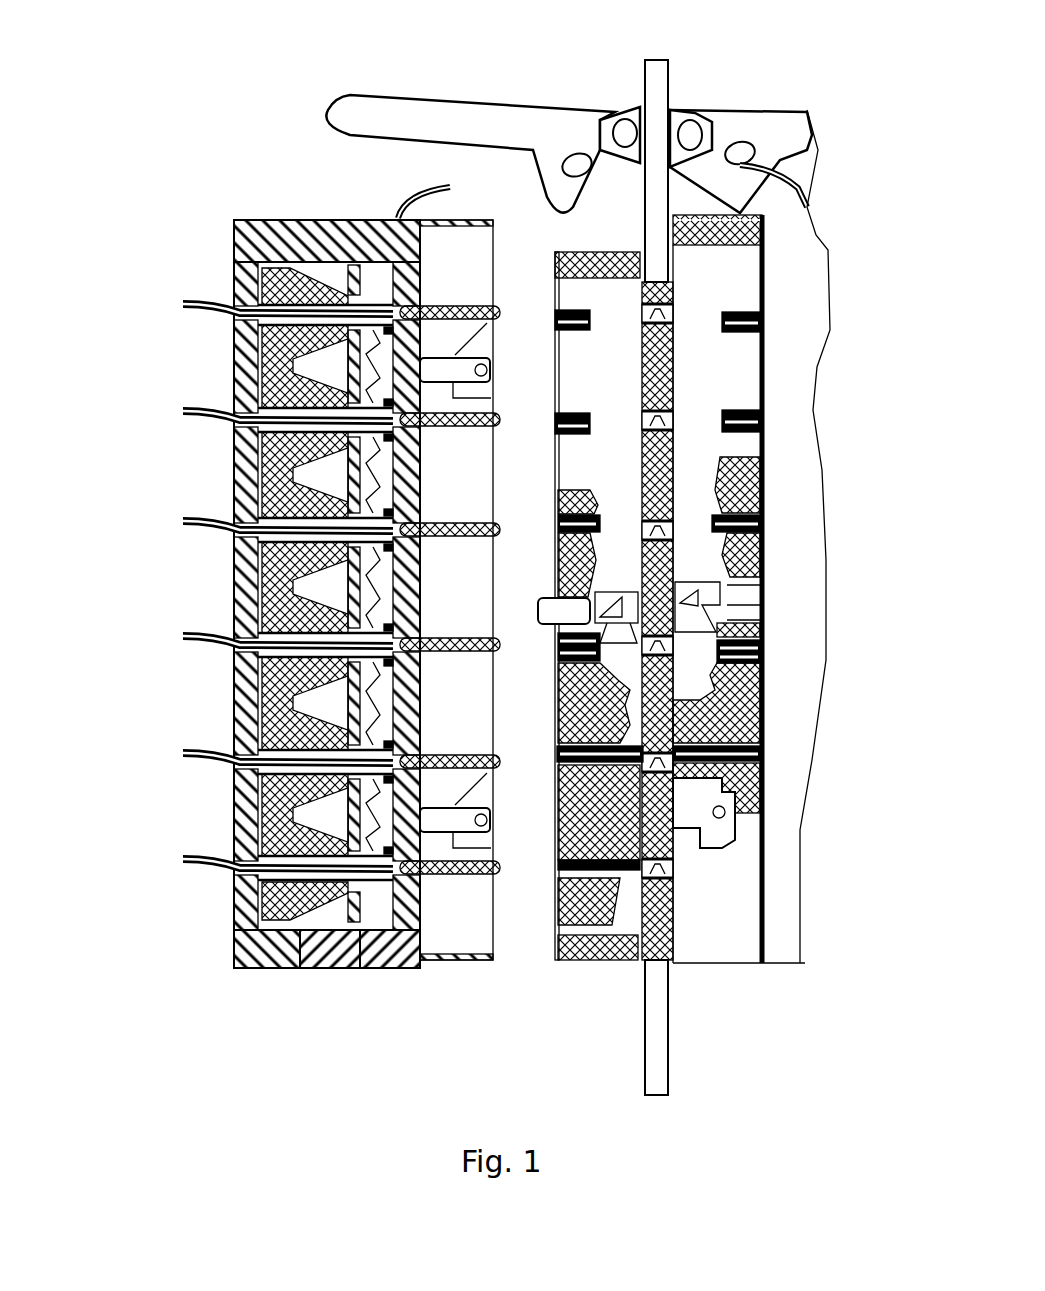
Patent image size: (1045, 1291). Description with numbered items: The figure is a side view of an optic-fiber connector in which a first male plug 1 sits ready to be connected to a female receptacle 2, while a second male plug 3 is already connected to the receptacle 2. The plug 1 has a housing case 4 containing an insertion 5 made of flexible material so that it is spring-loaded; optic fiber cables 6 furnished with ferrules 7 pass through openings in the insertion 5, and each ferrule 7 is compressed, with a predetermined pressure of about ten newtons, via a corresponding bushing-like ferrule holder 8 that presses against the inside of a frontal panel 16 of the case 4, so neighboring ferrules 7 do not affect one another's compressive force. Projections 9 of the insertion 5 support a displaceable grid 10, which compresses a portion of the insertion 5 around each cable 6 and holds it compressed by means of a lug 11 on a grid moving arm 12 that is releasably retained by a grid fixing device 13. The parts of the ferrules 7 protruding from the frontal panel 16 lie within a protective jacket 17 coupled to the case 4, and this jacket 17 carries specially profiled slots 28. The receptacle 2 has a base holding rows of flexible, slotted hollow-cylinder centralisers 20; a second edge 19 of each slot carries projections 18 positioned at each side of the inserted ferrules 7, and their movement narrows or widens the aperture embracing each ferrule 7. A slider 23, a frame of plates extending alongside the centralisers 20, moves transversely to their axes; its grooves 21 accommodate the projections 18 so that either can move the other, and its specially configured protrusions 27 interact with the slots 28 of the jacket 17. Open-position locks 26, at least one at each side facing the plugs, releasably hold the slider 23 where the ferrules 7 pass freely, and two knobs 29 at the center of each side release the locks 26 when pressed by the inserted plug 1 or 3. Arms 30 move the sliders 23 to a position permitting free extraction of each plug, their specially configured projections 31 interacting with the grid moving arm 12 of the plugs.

The first male plug 1 is at (285, 217).
The female receptacle 2 is at (657, 947).
The second male plug 3 is at (712, 965).
The housing case 4 is at (235, 920).
The insertion 5 is at (235, 968).
The optic fiber cables 6 is at (193, 305).
The ferrules 7 is at (393, 965).
The ferrule holder 8 is at (240, 214).
The projections 9 is at (337, 280).
The displaceable grid 10 is at (320, 965).
The lug 11 is at (235, 515).
The grid moving arm 12 is at (400, 215).
The grid fixing device 13 is at (470, 838).
The frontal panel 16 is at (520, 537).
The protective jacket 17 is at (453, 218).
The projections 18 is at (555, 907).
The second edge 19 is at (648, 893).
The centralisers 20 is at (673, 862).
The grooves 21 is at (740, 210).
The slider 23 is at (590, 423).
The open-position locks 26 is at (715, 525).
The protrusions 27 is at (762, 767).
The slots 28 is at (235, 350).
The knobs 29 is at (572, 612).
The arms 30 is at (440, 128).
The projections 31 is at (568, 158).